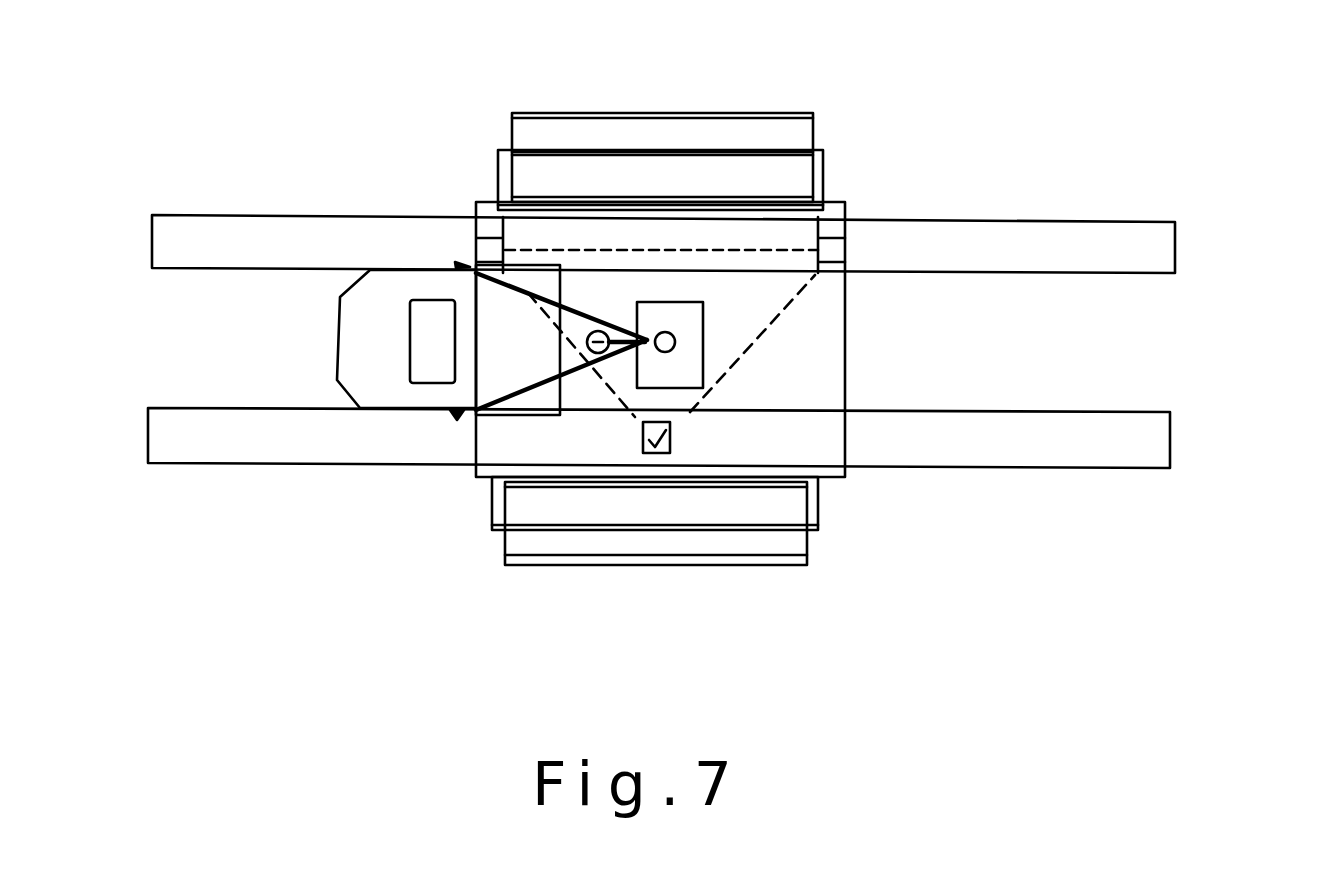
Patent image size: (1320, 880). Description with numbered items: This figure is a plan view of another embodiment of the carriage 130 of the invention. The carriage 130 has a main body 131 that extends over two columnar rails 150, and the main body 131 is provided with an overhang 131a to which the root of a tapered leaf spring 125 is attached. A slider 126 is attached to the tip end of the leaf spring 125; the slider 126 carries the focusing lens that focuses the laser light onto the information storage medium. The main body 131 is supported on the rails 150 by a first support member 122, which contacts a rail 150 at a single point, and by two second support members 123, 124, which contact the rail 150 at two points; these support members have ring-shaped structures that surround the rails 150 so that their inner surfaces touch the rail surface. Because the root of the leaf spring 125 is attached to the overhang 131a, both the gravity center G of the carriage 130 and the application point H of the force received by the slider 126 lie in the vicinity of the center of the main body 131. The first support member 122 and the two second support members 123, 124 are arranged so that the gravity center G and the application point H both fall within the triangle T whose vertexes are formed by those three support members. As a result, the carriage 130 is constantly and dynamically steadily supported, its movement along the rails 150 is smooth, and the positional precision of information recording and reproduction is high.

The first support member 122 is at (676, 441).
The second support member 123 is at (850, 227).
The second support member 124 is at (486, 228).
The tapered leaf spring 125 is at (447, 427).
The slider 126 is at (670, 302).
The carriage 130 is at (583, 587).
The main body 131 is at (845, 380).
The overhang 131a is at (337, 328).
The columnar rails 150 is at (1152, 432).
The gravity center G is at (596, 330).
The application point H is at (677, 338).
The triangle T is at (763, 332).